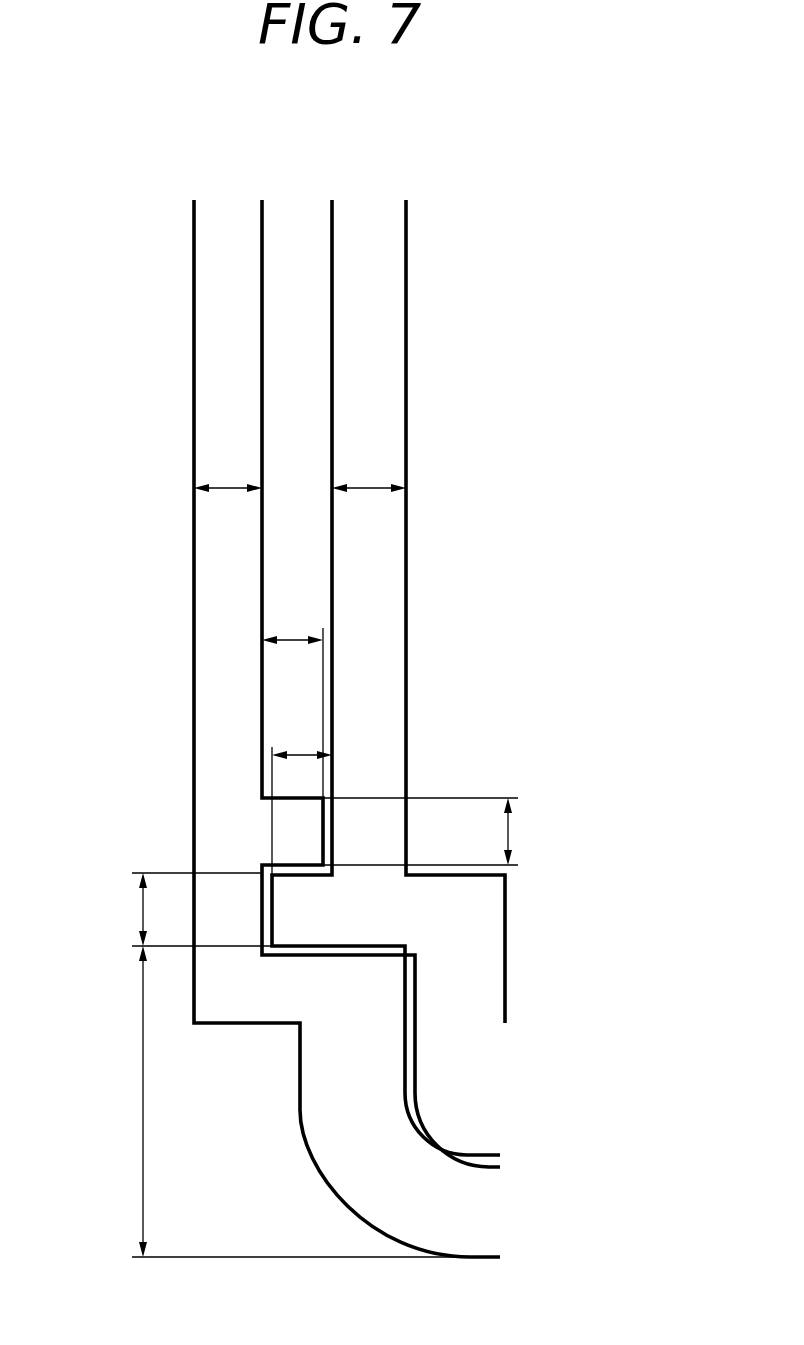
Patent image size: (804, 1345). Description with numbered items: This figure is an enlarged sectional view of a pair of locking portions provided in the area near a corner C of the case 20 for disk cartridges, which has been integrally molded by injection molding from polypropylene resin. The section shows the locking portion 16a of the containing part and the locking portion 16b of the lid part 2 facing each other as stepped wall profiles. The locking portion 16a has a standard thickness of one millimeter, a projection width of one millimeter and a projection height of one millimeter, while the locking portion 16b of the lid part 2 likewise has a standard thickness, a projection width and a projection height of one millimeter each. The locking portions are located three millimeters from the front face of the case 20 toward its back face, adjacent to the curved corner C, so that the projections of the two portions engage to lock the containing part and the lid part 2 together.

The lid part 2 is at (184, 418).
The case for disk cartridges 20 is at (418, 243).
The locking portion of the containing part 16a is at (452, 760).
The locking portion of the lid part 16b is at (163, 787).
The corner C is at (398, 1228).